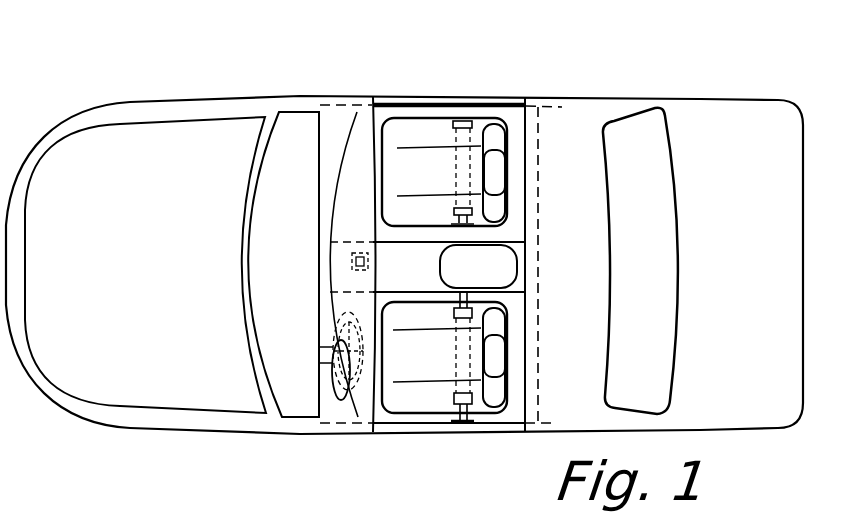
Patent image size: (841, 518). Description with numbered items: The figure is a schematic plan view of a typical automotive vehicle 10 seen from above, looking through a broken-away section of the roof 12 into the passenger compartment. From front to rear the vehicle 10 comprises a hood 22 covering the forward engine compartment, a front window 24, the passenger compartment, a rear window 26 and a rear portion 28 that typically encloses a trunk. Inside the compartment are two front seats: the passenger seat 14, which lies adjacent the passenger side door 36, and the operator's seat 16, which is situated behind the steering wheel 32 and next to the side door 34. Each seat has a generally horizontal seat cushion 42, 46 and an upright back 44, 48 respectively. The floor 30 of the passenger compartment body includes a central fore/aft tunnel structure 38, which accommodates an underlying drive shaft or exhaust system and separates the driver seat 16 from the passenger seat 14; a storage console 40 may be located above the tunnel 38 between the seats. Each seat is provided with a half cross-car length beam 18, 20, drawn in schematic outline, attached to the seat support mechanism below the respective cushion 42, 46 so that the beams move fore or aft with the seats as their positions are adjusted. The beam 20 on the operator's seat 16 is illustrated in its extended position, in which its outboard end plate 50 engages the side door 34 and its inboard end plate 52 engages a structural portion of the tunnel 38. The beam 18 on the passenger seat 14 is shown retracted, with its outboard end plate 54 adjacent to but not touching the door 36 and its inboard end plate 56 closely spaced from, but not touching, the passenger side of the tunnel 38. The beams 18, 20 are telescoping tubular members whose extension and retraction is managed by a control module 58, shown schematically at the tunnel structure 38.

The automotive vehicle 10 is at (300, 84).
The roof 12 is at (582, 125).
The passenger seat 14 is at (402, 124).
The operator's seat 16 is at (403, 414).
The half cross-car length beam 18 is at (474, 135).
The half cross-car length beam 20 is at (447, 394).
The hood 22 is at (158, 252).
The front window 24 is at (302, 254).
The rear window 26 is at (658, 217).
The rear portion 28 is at (754, 248).
The floor 30 is at (382, 420).
The steering wheel 32 is at (335, 375).
The side door 34 is at (455, 430).
The passenger side door 36 is at (423, 98).
The tunnel structure 38 is at (428, 279).
The storage console 40 is at (507, 258).
The seat cushion 42 is at (445, 186).
The upright back 44 is at (500, 174).
The seat cushion 46 is at (442, 367).
The upright back 48 is at (497, 353).
The outboard end plate 50 is at (470, 420).
The inboard end plate 52 is at (473, 292).
The outboard end plate 54 is at (464, 118).
The inboard end plate 56 is at (472, 228).
The control module 58 is at (358, 251).